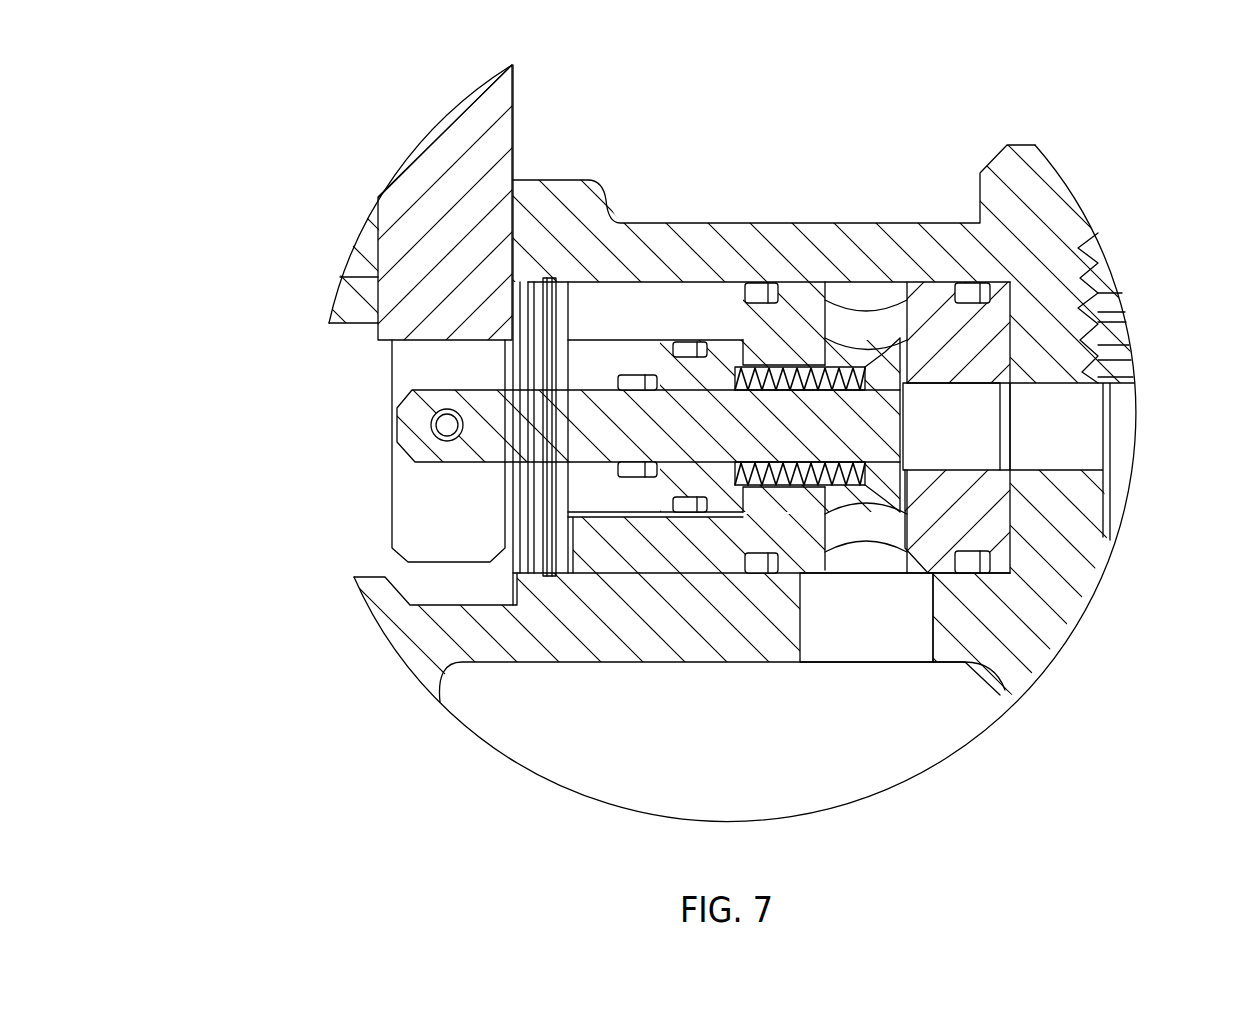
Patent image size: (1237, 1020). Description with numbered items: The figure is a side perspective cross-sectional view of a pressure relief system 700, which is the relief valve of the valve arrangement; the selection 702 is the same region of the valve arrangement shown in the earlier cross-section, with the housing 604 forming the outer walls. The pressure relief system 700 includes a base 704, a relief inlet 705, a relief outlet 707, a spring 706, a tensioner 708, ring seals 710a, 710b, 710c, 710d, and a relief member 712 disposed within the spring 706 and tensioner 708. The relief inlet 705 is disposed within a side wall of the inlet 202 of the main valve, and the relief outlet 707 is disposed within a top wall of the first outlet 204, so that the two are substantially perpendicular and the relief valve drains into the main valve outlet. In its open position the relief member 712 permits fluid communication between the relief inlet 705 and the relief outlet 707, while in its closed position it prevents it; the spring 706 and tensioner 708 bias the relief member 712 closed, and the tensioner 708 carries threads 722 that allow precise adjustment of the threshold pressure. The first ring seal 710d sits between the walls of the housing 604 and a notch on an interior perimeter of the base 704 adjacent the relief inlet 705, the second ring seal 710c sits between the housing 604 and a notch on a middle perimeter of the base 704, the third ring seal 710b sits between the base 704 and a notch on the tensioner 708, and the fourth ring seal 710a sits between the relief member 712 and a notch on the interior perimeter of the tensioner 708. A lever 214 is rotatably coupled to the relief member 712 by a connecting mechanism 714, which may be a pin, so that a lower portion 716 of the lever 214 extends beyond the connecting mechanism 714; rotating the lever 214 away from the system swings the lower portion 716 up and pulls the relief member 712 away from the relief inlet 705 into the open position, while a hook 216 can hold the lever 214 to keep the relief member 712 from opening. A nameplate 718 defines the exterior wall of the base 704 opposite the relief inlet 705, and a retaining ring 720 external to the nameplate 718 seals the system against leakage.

The pressure relief system 700 is at (999, 35).
The selection 702 is at (950, 752).
The first outlet 204 is at (753, 784).
The lever 214 is at (470, 160).
The hook 216 is at (353, 253).
The inlet 202 is at (1102, 310).
The base 704 is at (948, 320).
The relief inlet 705 is at (978, 442).
The spring 706 is at (815, 350).
The relief outlet 707 is at (890, 633).
The tensioner 708 is at (676, 348).
The fourth ring seal 710a is at (626, 375).
The third ring seal 710b is at (633, 350).
The second ring seal 710c is at (745, 350).
The first ring seal 710d is at (972, 290).
The relief member 712 is at (488, 400).
The connecting mechanism 714 is at (437, 427).
The lower portion 716 is at (468, 521).
The nameplate 718 is at (563, 297).
The retaining ring 720 is at (550, 577).
The threads 722 is at (612, 535).
The housing 604 is at (1040, 617).